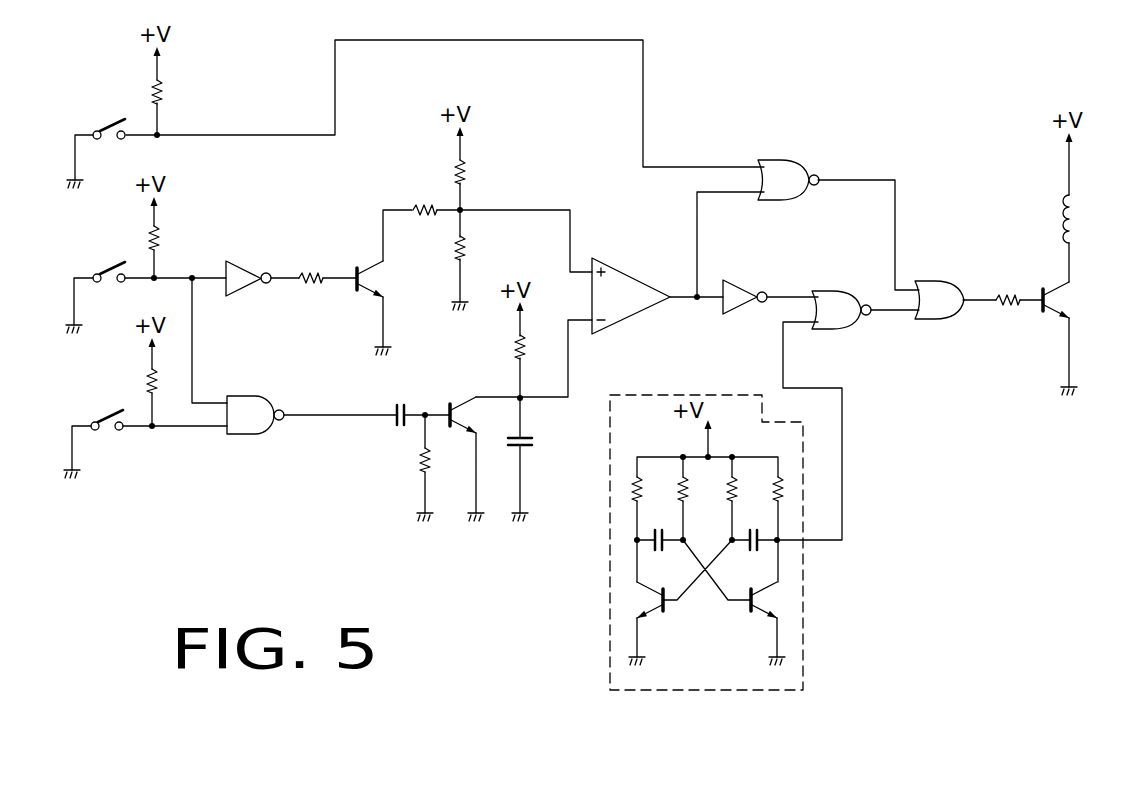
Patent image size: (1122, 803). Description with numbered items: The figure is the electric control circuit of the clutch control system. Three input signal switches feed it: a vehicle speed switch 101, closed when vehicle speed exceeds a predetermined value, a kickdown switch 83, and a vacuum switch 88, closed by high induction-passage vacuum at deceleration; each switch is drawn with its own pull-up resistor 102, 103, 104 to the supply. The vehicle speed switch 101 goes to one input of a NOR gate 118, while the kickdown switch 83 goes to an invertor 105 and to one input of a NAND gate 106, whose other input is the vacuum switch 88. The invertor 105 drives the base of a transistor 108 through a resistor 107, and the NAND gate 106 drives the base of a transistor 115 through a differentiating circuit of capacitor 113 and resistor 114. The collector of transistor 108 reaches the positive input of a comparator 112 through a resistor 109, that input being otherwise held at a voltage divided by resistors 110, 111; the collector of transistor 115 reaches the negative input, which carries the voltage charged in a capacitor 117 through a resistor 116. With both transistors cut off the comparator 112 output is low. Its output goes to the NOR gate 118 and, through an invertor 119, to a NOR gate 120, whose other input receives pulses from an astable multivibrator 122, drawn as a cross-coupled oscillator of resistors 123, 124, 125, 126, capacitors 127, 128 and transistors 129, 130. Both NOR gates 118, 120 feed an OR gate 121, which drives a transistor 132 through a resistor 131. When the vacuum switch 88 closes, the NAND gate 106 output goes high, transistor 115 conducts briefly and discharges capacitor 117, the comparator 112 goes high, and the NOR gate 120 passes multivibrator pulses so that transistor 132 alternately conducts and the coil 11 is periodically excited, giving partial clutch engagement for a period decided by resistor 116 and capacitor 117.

The coil 11 is at (1079, 219).
The kickdown switch 83 is at (118, 274).
The vacuum switch 88 is at (118, 432).
The vehicle speed switch 101 is at (131, 123).
The resistor 102 is at (163, 94).
The resistor 103 is at (160, 240).
The resistor 104 is at (146, 391).
The invertor 105 is at (249, 268).
The NAND gate 106 is at (254, 395).
The resistor 107 is at (298, 285).
The transistor 108 is at (366, 281).
The resistor 109 is at (429, 207).
The resistor 110 is at (464, 175).
The resistor 111 is at (465, 251).
The comparator 112 is at (630, 287).
The capacitor 113 is at (403, 403).
The resistor 114 is at (419, 461).
The transistor 115 is at (461, 420).
The resistor 116 is at (514, 352).
The capacitor 117 is at (535, 442).
The NOR gate 118 is at (791, 163).
The invertor 119 is at (740, 284).
The NOR gate 120 is at (834, 335).
The OR gate 121 is at (948, 282).
The astable multivibrator 122 is at (804, 655).
The resistor 123 is at (641, 486).
The resistor 124 is at (677, 492).
The resistor 125 is at (732, 492).
The resistor 126 is at (780, 492).
The capacitor 127 is at (674, 551).
The capacitor 128 is at (760, 551).
The transistor 129 is at (648, 609).
The transistor 130 is at (764, 609).
The resistor 131 is at (1009, 295).
The transistor 132 is at (1069, 299).